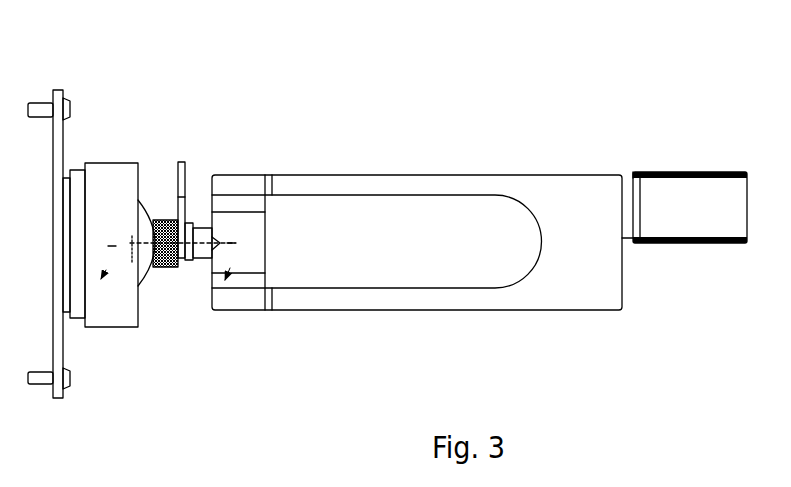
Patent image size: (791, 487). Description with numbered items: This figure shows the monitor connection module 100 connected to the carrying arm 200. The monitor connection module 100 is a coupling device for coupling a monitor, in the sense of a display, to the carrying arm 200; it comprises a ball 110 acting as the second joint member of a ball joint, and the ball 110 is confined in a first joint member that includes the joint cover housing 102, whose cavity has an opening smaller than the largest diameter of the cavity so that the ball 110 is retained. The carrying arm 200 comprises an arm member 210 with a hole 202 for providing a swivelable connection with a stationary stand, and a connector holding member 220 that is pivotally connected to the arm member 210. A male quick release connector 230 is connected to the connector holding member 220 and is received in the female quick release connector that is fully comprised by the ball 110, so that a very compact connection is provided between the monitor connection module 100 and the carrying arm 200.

The monitor connection module 100 is at (125, 233).
The joint cover housing 102 is at (113, 163).
The ball 110 is at (148, 280).
The carrying arm 200 is at (438, 224).
The hole 202 is at (673, 173).
The arm member 210 is at (307, 177).
The connector holding member 220 is at (268, 257).
The male quick release connector 230 is at (171, 284).